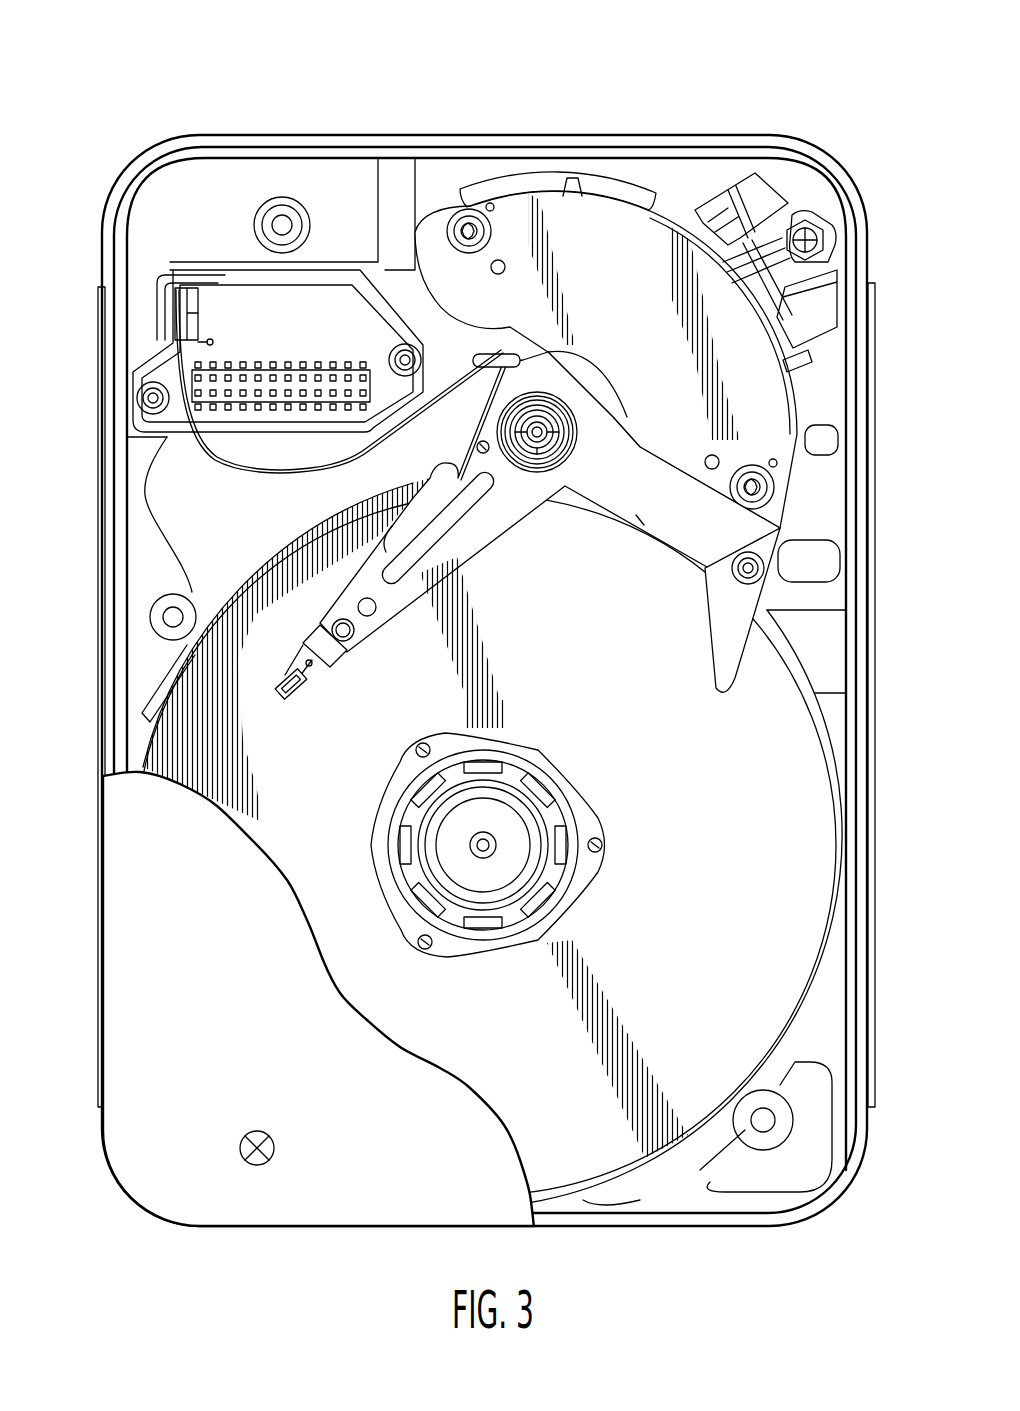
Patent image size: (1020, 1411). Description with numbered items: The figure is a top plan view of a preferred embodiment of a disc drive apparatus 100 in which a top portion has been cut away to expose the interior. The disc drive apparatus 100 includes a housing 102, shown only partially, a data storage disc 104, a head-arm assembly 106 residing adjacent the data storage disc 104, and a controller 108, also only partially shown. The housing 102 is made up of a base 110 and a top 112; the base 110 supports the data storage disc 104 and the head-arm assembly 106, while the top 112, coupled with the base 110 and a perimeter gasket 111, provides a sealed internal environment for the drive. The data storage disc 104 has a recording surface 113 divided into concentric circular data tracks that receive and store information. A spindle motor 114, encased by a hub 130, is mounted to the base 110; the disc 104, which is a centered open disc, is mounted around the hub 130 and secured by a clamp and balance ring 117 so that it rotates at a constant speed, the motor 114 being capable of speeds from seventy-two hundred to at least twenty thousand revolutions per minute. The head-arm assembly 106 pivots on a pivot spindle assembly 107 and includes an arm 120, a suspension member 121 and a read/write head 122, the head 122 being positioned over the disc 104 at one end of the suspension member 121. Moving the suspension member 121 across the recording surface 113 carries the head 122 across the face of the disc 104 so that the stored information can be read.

The disc drive apparatus 100 is at (500, 85).
The housing 102 is at (107, 1026).
The data storage disc 104 is at (840, 843).
The head-arm assembly 106 is at (445, 470).
The pivot spindle assembly 107 is at (548, 470).
The controller 108 is at (192, 378).
The base 110 is at (153, 573).
The perimeter gasket 111 is at (773, 133).
The top 112 is at (350, 1160).
The recording surface 113 is at (770, 925).
The spindle motor 114 is at (522, 848).
The clamp and balance ring 117 is at (565, 917).
The arm 120 is at (378, 560).
The suspension member 121 is at (320, 662).
The read/write head 122 is at (287, 684).
The hub 130 is at (530, 770).